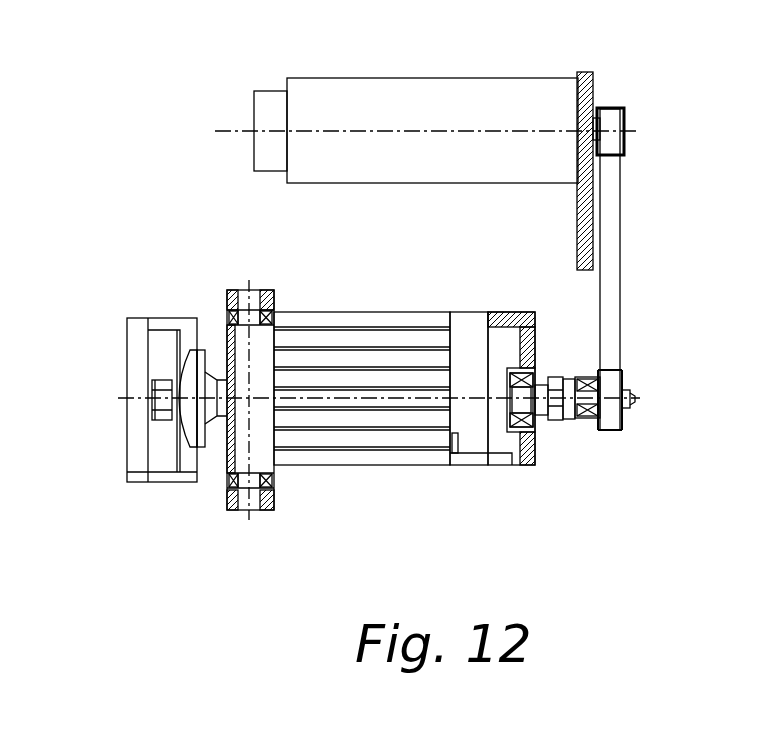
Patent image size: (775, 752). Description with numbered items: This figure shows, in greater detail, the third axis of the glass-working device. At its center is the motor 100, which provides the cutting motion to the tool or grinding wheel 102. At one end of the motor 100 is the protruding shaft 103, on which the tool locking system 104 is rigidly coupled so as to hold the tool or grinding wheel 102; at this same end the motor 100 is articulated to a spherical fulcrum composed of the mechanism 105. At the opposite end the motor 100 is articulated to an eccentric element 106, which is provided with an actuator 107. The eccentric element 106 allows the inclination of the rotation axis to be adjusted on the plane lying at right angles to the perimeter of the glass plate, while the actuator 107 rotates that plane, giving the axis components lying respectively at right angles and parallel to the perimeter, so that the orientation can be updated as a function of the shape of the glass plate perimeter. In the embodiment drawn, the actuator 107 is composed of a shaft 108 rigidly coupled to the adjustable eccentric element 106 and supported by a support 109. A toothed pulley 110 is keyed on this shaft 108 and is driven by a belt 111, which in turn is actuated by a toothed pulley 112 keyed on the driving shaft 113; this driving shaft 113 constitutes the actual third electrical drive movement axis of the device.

The motor 100 is at (347, 441).
The tool or grinding wheel 102 is at (135, 327).
The protruding shaft 103 is at (177, 395).
The tool locking system 104 is at (180, 440).
The mechanism 105 is at (247, 262).
The eccentric element 106 is at (565, 420).
The actuator 107 is at (651, 186).
The shaft 108 is at (597, 418).
The support 109 is at (588, 378).
The toothed pulley 110 is at (622, 375).
The belt 111 is at (615, 271).
The toothed pulley 112 is at (622, 113).
The driving shaft 113 is at (443, 101).